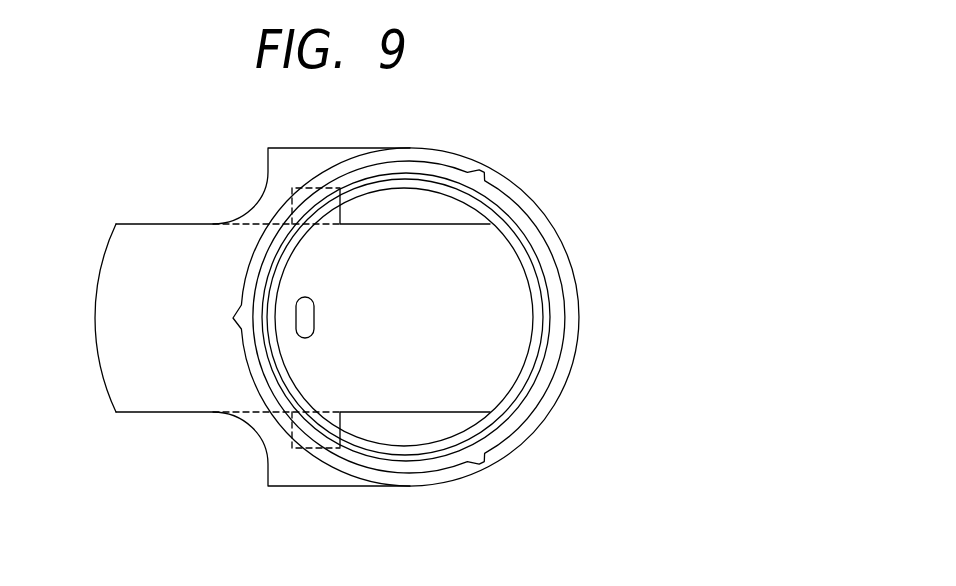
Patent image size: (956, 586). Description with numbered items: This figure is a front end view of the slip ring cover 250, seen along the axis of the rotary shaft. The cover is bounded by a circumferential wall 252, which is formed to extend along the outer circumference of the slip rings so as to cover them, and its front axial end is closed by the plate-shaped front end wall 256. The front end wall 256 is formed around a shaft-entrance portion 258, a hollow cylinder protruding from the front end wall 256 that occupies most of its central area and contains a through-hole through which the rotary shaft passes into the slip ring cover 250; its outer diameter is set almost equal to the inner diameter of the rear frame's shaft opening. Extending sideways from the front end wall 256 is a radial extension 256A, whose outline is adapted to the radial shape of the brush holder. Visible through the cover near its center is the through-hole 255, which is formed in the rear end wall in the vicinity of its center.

The slip ring cover 250 is at (541, 153).
The circumferential wall 252 is at (578, 289).
The through-hole 255 is at (303, 314).
The front end wall 256 is at (278, 456).
The radial extension 256A is at (153, 385).
The shaft-entrance portion 258 is at (552, 358).